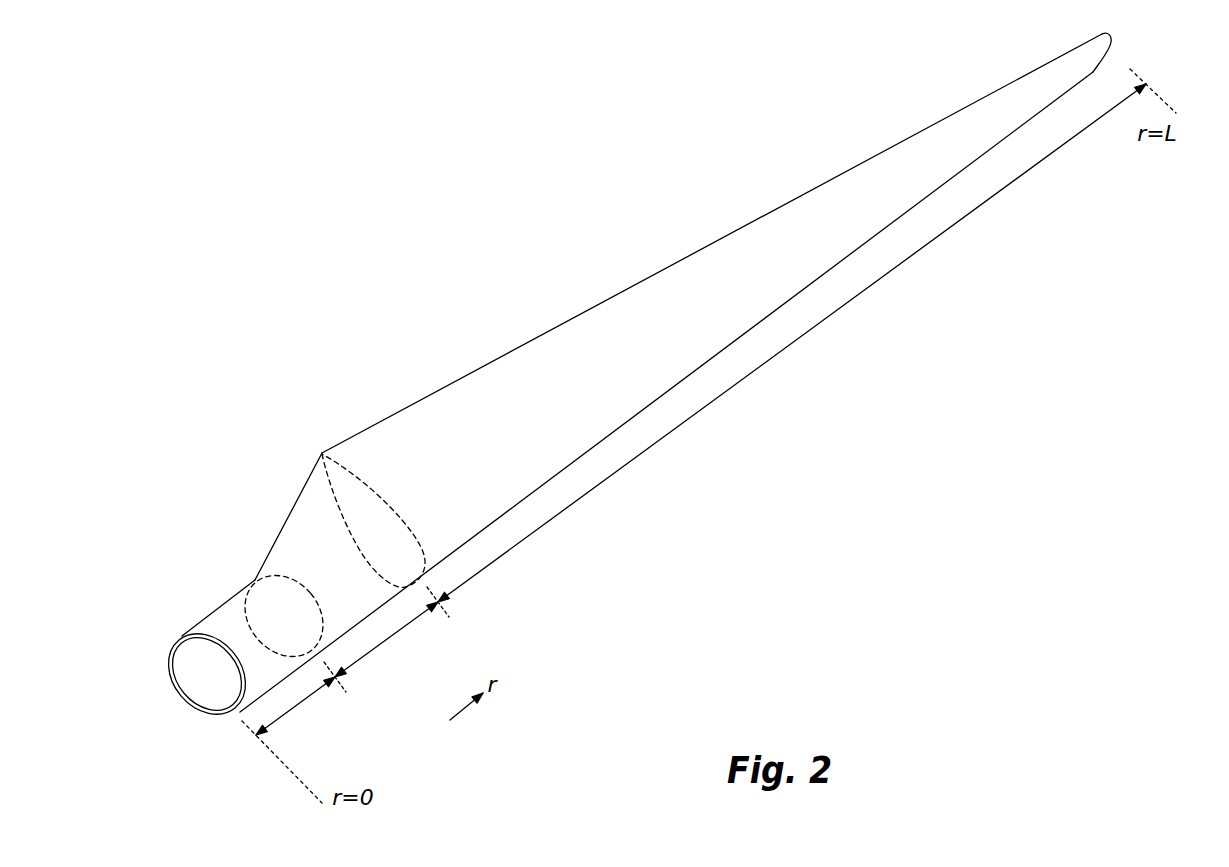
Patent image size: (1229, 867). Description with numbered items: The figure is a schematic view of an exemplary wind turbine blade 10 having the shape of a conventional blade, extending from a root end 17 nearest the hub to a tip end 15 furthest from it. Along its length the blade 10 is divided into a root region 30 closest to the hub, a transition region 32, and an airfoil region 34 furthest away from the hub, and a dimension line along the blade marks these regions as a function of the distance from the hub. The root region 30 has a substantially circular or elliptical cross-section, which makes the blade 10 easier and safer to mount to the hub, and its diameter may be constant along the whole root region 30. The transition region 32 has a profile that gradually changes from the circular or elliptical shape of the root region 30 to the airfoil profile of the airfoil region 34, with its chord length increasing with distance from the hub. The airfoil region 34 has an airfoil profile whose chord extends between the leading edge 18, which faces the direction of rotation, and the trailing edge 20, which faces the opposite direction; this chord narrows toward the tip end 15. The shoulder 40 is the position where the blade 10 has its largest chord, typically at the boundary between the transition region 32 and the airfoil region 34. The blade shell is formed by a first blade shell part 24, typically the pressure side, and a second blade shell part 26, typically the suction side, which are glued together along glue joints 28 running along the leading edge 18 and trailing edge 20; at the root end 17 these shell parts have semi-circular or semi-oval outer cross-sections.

The wind turbine blade 10 is at (669, 406).
The tip end 15 is at (1110, 42).
The root end 17 is at (195, 662).
The leading edge 18 is at (827, 273).
The trailing edge 20 is at (702, 247).
The first blade shell part 24 is at (195, 634).
The second blade shell part 26 is at (202, 668).
The glue joints 28 is at (183, 636).
The root region 30 is at (300, 704).
The transition region 32 is at (392, 638).
The airfoil region 34 is at (722, 395).
The shoulder 40 is at (321, 453).